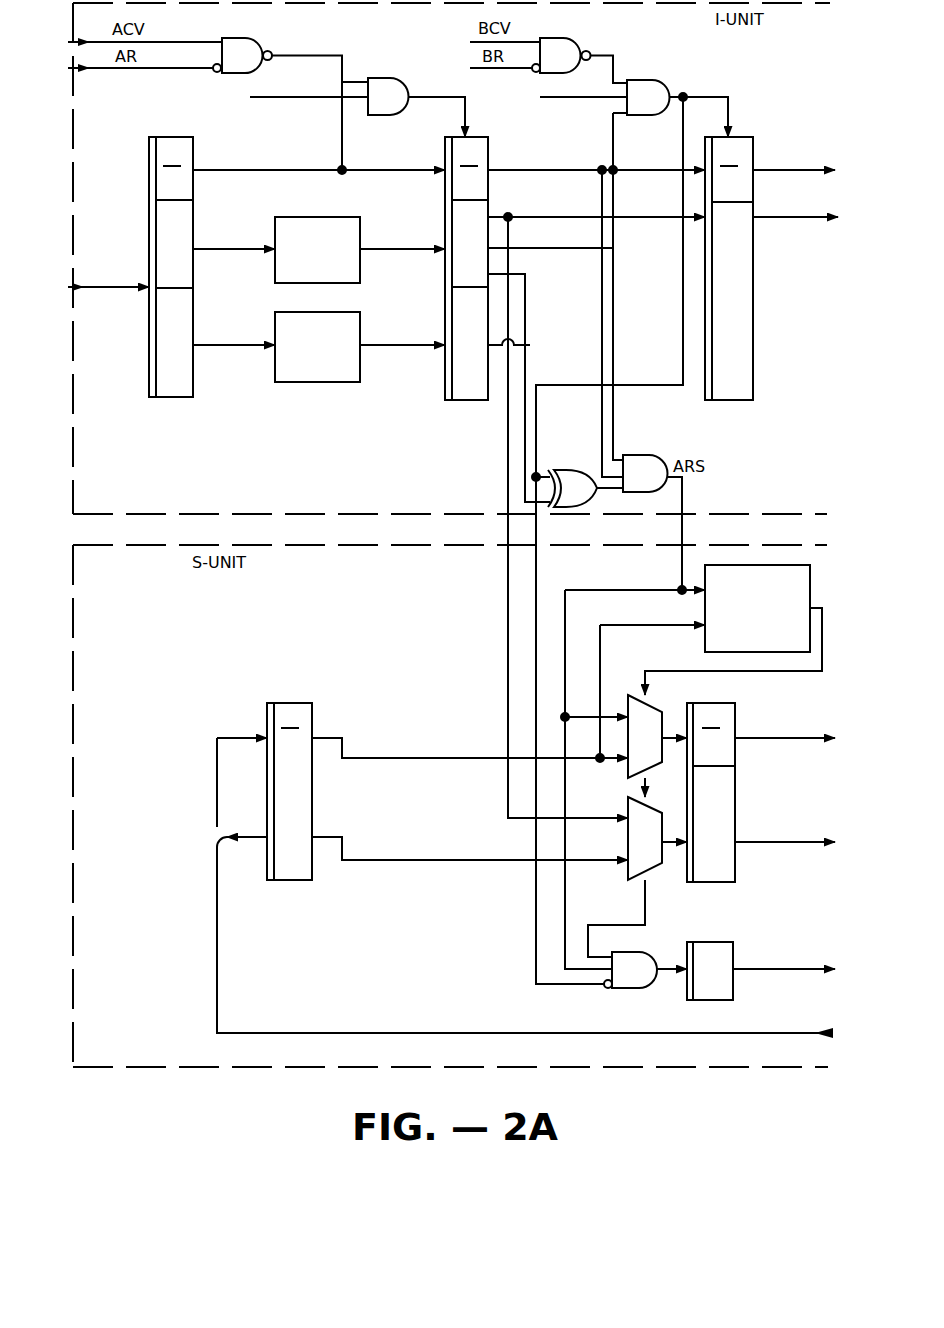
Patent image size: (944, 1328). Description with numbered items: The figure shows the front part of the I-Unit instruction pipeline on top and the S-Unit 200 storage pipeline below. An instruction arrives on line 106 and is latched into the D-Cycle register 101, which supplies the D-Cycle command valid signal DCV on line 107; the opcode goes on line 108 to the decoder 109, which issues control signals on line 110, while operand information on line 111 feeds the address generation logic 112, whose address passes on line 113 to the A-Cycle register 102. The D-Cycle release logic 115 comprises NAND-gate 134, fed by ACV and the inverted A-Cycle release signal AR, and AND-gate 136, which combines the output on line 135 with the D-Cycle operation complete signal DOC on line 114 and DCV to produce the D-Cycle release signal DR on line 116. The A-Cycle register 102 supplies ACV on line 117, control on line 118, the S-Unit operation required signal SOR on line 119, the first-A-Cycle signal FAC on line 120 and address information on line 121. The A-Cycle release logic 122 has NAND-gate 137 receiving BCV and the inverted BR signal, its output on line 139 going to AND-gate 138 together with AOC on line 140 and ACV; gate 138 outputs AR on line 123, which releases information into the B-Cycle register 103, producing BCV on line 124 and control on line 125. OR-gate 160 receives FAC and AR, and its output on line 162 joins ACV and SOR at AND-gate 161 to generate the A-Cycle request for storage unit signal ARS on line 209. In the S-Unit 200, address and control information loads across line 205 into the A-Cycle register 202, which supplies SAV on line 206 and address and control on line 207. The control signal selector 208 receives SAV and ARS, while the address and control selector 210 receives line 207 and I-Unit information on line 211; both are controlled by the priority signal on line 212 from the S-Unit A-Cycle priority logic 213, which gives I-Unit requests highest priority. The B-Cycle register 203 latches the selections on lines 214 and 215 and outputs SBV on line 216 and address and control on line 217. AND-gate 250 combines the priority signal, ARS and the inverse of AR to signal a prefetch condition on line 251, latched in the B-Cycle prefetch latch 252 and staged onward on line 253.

The D-Cycle register 101 is at (170, 398).
The A-Cycle register 102 is at (462, 402).
The B-Cycle register 103 is at (730, 400).
The instruction line 106 is at (125, 290).
The DCV line 107 is at (296, 172).
The opcode line 108 is at (250, 252).
The decoder 109 is at (296, 283).
The control signal line 110 is at (420, 252).
The operand information line 111 is at (233, 348).
The address generation logic 112 is at (312, 383).
The address line 113 is at (417, 348).
The D-Cycle operation complete line 114 is at (272, 100).
The D-Cycle release logic 115 is at (306, 45).
The D-Cycle release signal line 116 is at (468, 104).
The ACV line 117 is at (556, 172).
The control signal line 118 is at (652, 216).
The SOR line 119 is at (615, 275).
The FAC line 120 is at (528, 325).
The address information line 121 is at (530, 345).
The A-Cycle release logic 122 is at (650, 45).
The A-Cycle release signal line 123 is at (732, 103).
The BCV line 124 is at (821, 172).
The control information line 125 is at (808, 220).
The NAND-gate 134 is at (240, 40).
The NAND-gate output line 135 is at (330, 52).
The AND-gate 136 is at (382, 117).
The NAND-gate 137 is at (568, 38).
The AND-gate 138 is at (650, 80).
The NAND-gate output line 139 is at (612, 57).
The AOC line 140 is at (582, 103).
The OR-gate 160 is at (585, 470).
The AND-gate 161 is at (645, 455).
The OR-gate output line 162 is at (601, 494).
The S-Unit 200 is at (190, 545).
The A-Cycle register 202 is at (285, 882).
The B-Cycle register 203 is at (728, 882).
The port output line 205 is at (215, 884).
The SAV line 206 is at (408, 760).
The address and control line 207 is at (408, 862).
The control signal selector 208 is at (640, 690).
The ARS line 209 is at (610, 588).
The address and control selector 210 is at (652, 882).
The I-Unit address and control line 211 is at (506, 592).
The priority signal line 212 is at (752, 673).
The S-Unit A-Cycle priority logic 213 is at (703, 612).
The selected control signal line 214 is at (668, 725).
The selected address and control line 215 is at (663, 788).
The SBV line 216 is at (800, 740).
The address and control information line 217 is at (810, 838).
The AND-gate 250 is at (632, 989).
The prefetch gate output line 251 is at (668, 962).
The B-Cycle prefetch latch 252 is at (725, 1000).
The B-Cycle prefetch signal line 253 is at (812, 966).